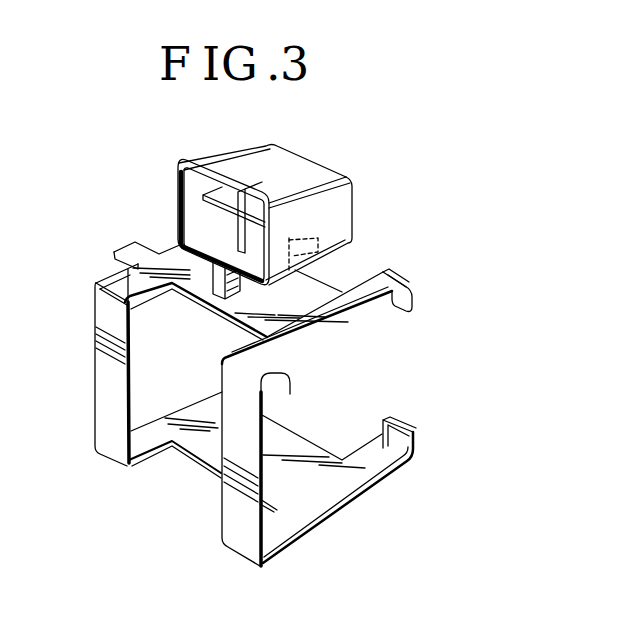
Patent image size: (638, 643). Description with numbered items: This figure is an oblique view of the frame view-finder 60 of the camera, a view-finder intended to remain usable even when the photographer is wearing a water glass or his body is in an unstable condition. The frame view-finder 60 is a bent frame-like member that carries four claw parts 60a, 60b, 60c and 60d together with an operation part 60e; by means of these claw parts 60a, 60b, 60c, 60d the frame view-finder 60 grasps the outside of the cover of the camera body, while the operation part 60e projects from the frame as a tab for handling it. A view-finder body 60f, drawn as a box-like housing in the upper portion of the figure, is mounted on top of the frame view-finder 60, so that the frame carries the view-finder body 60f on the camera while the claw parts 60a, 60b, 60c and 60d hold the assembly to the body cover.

The frame view-finder 60 is at (290, 337).
The claw part 60a is at (401, 418).
The claw part 60b is at (415, 300).
The claw part 60c is at (320, 244).
The claw part 60d is at (290, 378).
The operation part 60e is at (128, 249).
The view-finder body 60f is at (319, 200).